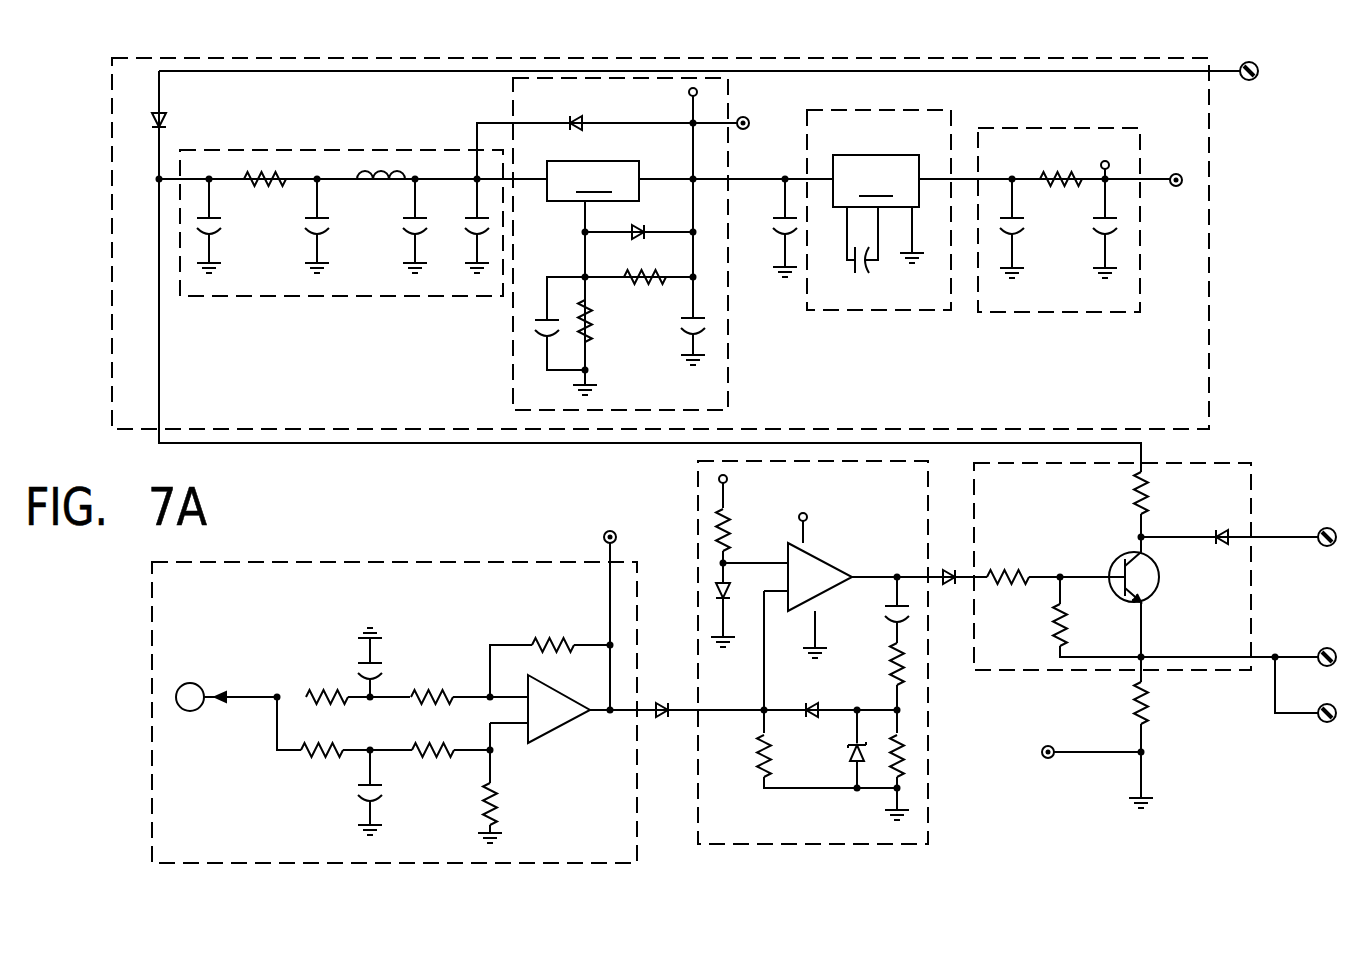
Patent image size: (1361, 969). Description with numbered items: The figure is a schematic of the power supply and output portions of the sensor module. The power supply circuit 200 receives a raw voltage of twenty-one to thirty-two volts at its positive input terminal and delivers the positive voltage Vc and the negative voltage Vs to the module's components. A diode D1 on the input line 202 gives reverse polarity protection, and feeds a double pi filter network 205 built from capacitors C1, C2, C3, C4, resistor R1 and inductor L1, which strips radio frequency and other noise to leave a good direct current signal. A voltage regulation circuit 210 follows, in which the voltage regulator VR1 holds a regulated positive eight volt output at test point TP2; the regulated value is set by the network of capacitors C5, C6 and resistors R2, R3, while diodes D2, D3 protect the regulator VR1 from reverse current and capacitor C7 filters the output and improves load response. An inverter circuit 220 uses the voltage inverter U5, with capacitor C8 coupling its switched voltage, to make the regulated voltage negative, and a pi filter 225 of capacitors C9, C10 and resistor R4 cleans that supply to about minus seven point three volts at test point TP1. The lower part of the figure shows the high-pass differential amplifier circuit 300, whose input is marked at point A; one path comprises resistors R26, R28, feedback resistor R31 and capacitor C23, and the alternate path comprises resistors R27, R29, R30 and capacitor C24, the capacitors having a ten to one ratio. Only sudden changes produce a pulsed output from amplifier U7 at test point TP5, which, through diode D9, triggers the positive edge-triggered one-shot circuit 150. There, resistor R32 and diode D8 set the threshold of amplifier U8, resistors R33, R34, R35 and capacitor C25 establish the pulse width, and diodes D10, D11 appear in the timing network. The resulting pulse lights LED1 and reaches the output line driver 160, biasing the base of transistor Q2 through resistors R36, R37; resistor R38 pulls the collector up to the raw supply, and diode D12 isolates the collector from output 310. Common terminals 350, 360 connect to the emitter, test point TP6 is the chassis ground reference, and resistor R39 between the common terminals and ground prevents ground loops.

The power supply circuit 200 is at (1030, 58).
The input line 202 is at (363, 73).
The double pi filter network 205 is at (400, 298).
The voltage regulation circuit 210 is at (735, 368).
The inverter circuit 220 is at (847, 312).
The pi filter 225 is at (1040, 313).
The output line driver 160 is at (1222, 463).
The positive edge-triggered one-shot circuit 150 is at (930, 812).
The high-pass differential amplifier circuit 300 is at (430, 562).
The output 310 is at (1331, 526).
The common terminal 350 is at (1331, 648).
The common terminal 360 is at (1329, 724).
The diode D1 is at (166, 118).
The diode D2 is at (578, 115).
The diode D3 is at (640, 225).
The diode D8 is at (731, 588).
The diode D9 is at (660, 720).
The diode D10 is at (822, 705).
The diode D11 is at (851, 758).
The diode D12 is at (1221, 529).
The LED LED1 is at (948, 568).
The resistor R1 is at (250, 186).
The resistor R2 is at (590, 312).
The resistor R3 is at (640, 272).
The resistor R4 is at (1065, 172).
The resistor R26 is at (338, 691).
The resistor R27 is at (320, 760).
The resistor R28 is at (420, 690).
The resistor R29 is at (440, 745).
The resistor R30 is at (498, 790).
The feedback resistor R31 is at (562, 640).
The resistor R32 is at (730, 519).
The resistor R33 is at (757, 748).
The resistor R34 is at (905, 760).
The resistor R35 is at (892, 668).
The bias resistor R36 is at (1012, 567).
The bias resistor R37 is at (1055, 633).
The pull up resistor R38 is at (1132, 506).
The resistor R39 is at (1147, 708).
The capacitor C1 is at (218, 229).
The capacitor C2 is at (330, 231).
The capacitor C3 is at (425, 215).
The capacitor C4 is at (470, 232).
The capacitor C5 is at (535, 322).
The capacitor C6 is at (685, 334).
The capacitor C7 is at (780, 216).
The capacitor C8 is at (857, 276).
The capacitor C9 is at (1017, 222).
The capacitor C10 is at (1098, 236).
The capacitor C23 is at (378, 662).
The capacitor C24 is at (378, 797).
The capacitor C25 is at (891, 622).
The inductor L1 is at (368, 187).
The voltage regulator VR1 is at (593, 181).
The voltage inverter U5 is at (878, 209).
The amplifier U7 is at (548, 725).
The amplifier U8 is at (830, 574).
The transistor Q2 is at (1136, 600).
The test point TP1 is at (1185, 186).
The test point TP2 is at (745, 115).
The test point TP5 is at (608, 530).
The test point TP6 is at (1051, 742).
The positive voltage Vc is at (833, 523).
The negative voltage Vs is at (1109, 161).
The input node A is at (228, 697).